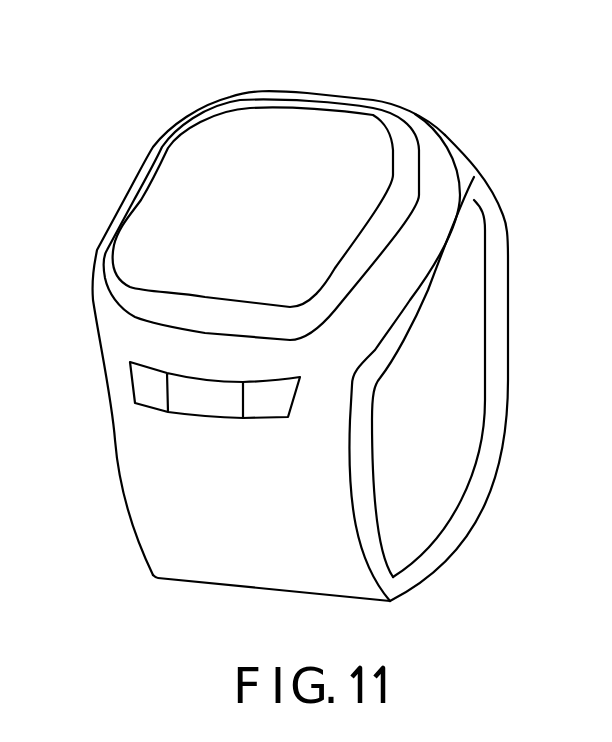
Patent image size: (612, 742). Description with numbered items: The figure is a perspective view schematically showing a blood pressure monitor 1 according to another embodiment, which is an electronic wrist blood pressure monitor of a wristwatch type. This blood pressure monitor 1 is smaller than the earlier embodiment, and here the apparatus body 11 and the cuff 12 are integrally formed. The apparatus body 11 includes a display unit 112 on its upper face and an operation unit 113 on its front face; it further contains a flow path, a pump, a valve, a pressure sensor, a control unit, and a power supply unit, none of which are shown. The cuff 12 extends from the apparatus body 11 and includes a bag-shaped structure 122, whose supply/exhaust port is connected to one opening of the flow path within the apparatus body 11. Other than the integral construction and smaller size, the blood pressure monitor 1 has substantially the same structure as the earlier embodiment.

The blood pressure monitor 1 is at (306, 318).
The apparatus body 11 is at (247, 318).
The cuff 12 is at (475, 368).
The display unit 112 is at (318, 130).
The operation unit 113 is at (148, 386).
The bag-shaped structure 122 is at (460, 432).